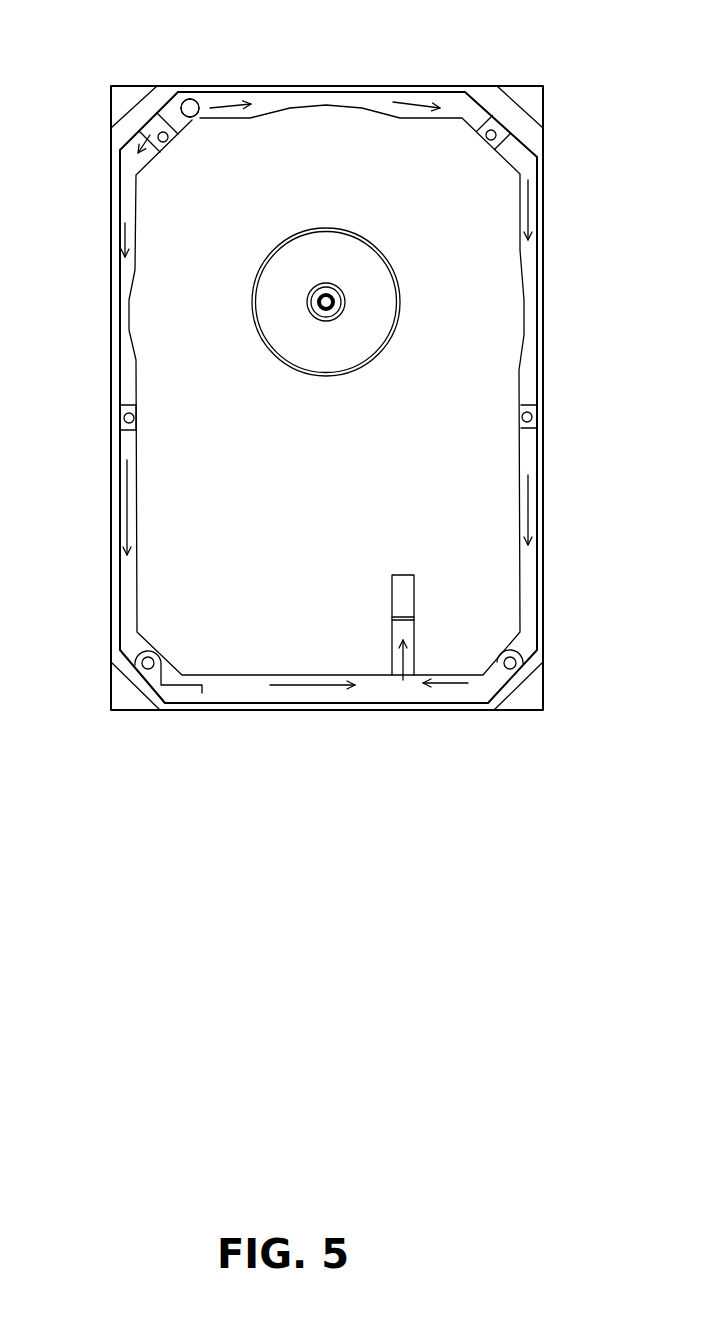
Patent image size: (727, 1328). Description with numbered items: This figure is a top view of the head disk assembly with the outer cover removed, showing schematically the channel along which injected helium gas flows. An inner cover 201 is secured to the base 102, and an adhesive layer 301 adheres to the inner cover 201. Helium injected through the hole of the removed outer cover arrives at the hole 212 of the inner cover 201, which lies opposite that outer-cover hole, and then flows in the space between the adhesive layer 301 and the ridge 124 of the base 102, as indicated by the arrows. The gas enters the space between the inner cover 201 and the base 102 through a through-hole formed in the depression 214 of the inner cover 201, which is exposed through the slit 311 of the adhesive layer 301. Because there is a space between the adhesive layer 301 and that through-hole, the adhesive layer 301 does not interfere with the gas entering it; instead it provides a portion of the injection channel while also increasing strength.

The base 102 is at (543, 107).
The ridge 124 is at (305, 92).
The inner cover 201 is at (525, 372).
The hole of the inner cover 212 is at (200, 93).
The depression of the inner cover 214 is at (406, 604).
The adhesive layer 301 is at (133, 375).
The slit 311 is at (389, 640).